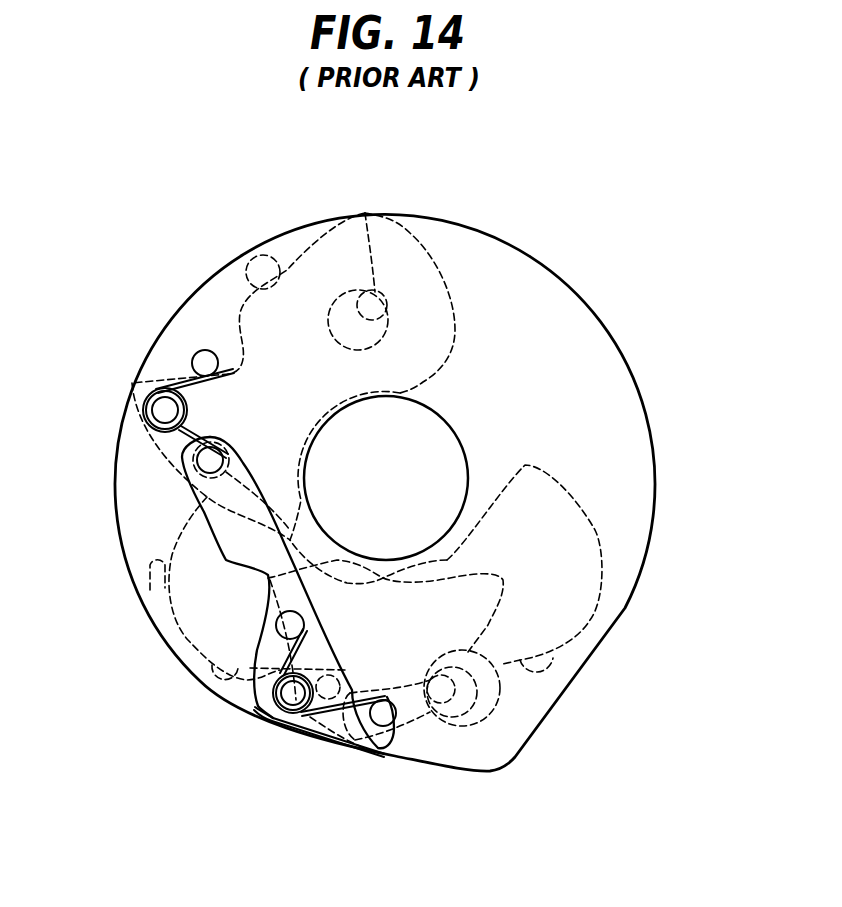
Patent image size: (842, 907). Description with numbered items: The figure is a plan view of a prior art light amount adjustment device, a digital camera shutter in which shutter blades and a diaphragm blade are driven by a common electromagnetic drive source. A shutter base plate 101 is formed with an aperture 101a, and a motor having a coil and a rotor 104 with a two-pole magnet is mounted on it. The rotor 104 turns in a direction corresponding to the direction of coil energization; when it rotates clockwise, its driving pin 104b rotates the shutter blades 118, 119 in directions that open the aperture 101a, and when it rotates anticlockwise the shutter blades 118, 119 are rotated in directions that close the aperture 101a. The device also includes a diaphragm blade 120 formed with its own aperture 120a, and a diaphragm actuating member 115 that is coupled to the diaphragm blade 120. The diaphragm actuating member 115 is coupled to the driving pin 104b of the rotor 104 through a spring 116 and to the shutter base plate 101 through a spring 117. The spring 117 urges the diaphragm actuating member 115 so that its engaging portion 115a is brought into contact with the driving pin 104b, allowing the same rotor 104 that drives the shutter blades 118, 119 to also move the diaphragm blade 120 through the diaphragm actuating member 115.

The shutter base plate 101 is at (600, 358).
The aperture 101a is at (447, 445).
The rotor 104 is at (485, 665).
The driving pin 104b is at (388, 720).
The diaphragm actuating member 115 is at (263, 570).
The engaging portion 115a is at (366, 745).
The spring 116 is at (312, 712).
The spring 117 is at (177, 383).
The shutter blade 118 is at (187, 598).
The shutter blade 119 is at (597, 560).
The diaphragm blade 120 is at (357, 212).
The aperture 120a is at (384, 290).